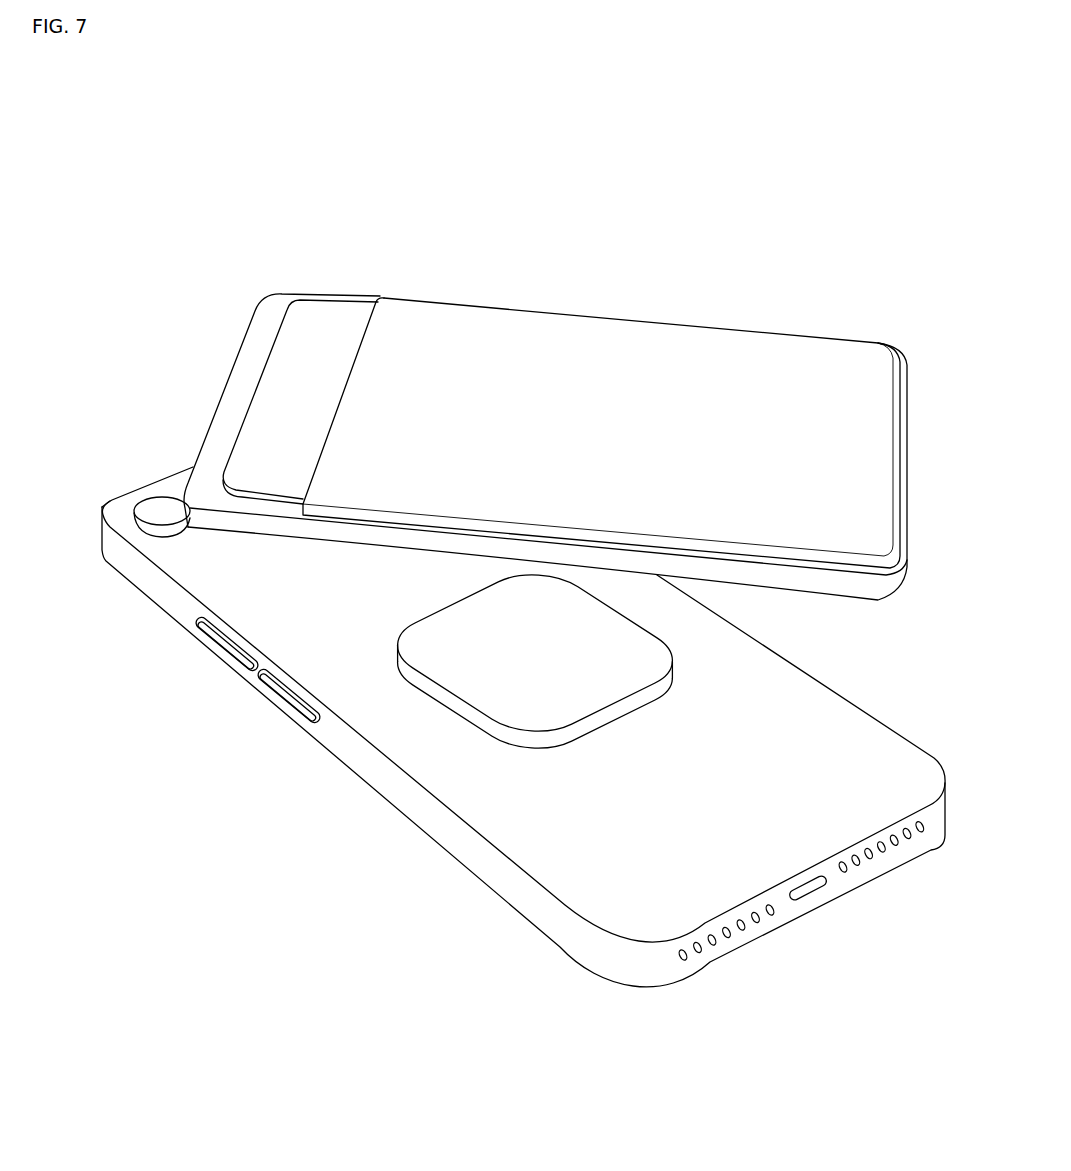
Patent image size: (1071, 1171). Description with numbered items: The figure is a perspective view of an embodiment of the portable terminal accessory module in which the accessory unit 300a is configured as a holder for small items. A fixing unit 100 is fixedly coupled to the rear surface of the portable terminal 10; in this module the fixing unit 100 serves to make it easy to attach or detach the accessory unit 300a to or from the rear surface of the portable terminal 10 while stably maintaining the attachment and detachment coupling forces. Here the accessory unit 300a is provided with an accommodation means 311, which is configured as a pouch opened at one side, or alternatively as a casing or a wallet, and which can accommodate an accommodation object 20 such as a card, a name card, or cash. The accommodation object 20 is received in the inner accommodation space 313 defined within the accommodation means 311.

The portable terminal 10 is at (457, 875).
The fixing unit 100 is at (423, 717).
The accommodation object 20 is at (230, 304).
The accommodation means 311 is at (268, 317).
The inner accommodation space 313 is at (360, 333).
The accessory unit 300a is at (630, 281).